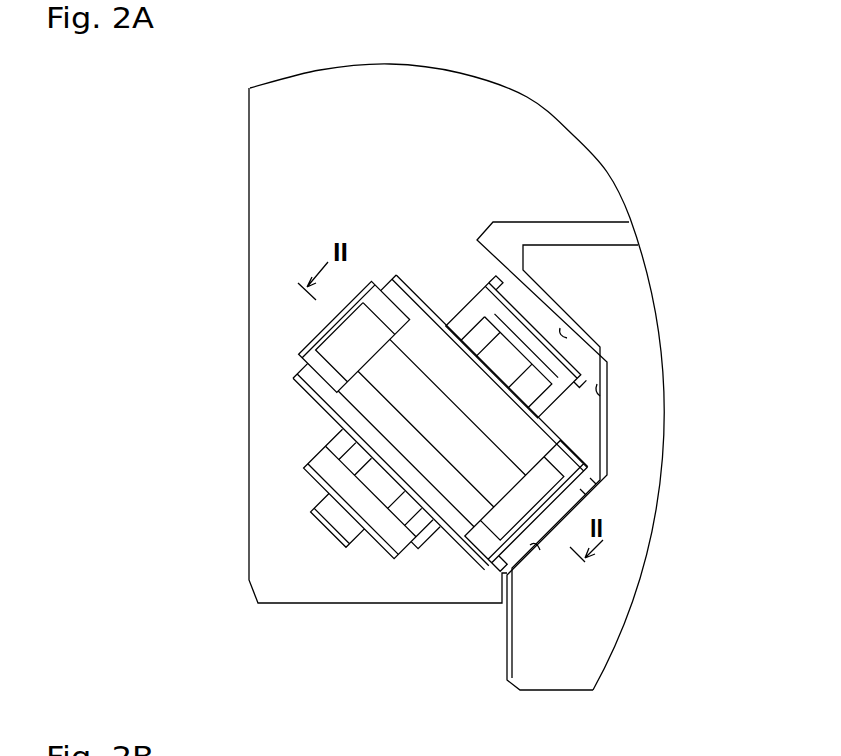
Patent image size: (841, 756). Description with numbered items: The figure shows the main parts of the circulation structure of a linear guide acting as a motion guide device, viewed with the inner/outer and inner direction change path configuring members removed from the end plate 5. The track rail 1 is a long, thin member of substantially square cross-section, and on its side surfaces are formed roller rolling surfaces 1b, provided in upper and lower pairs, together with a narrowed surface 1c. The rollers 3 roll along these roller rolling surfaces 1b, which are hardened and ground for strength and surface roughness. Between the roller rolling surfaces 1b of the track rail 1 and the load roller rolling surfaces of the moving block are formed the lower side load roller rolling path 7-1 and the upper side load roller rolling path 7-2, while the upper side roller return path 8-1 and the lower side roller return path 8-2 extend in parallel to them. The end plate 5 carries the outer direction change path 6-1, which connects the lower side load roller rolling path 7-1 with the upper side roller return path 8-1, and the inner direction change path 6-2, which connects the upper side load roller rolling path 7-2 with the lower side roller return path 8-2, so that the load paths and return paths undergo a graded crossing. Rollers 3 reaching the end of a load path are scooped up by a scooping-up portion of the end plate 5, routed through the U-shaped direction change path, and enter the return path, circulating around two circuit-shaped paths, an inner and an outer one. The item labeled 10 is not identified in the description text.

The track rail 1 is at (590, 661).
The roller rolling surface 1b is at (566, 333).
The narrowed surface 1c is at (600, 387).
The roller 3 is at (583, 492).
The end plate 5 is at (391, 88).
The outer direction change path 6-1 is at (465, 495).
The inner direction change path 6-2 is at (413, 537).
The lower side load roller rolling path 7-1 is at (573, 500).
The upper side load roller rolling path 7-2 is at (523, 293).
The upper side roller return path 8-1 is at (372, 282).
The lower side roller return path 8-2 is at (363, 538).
The spacer 10 is at (592, 481).